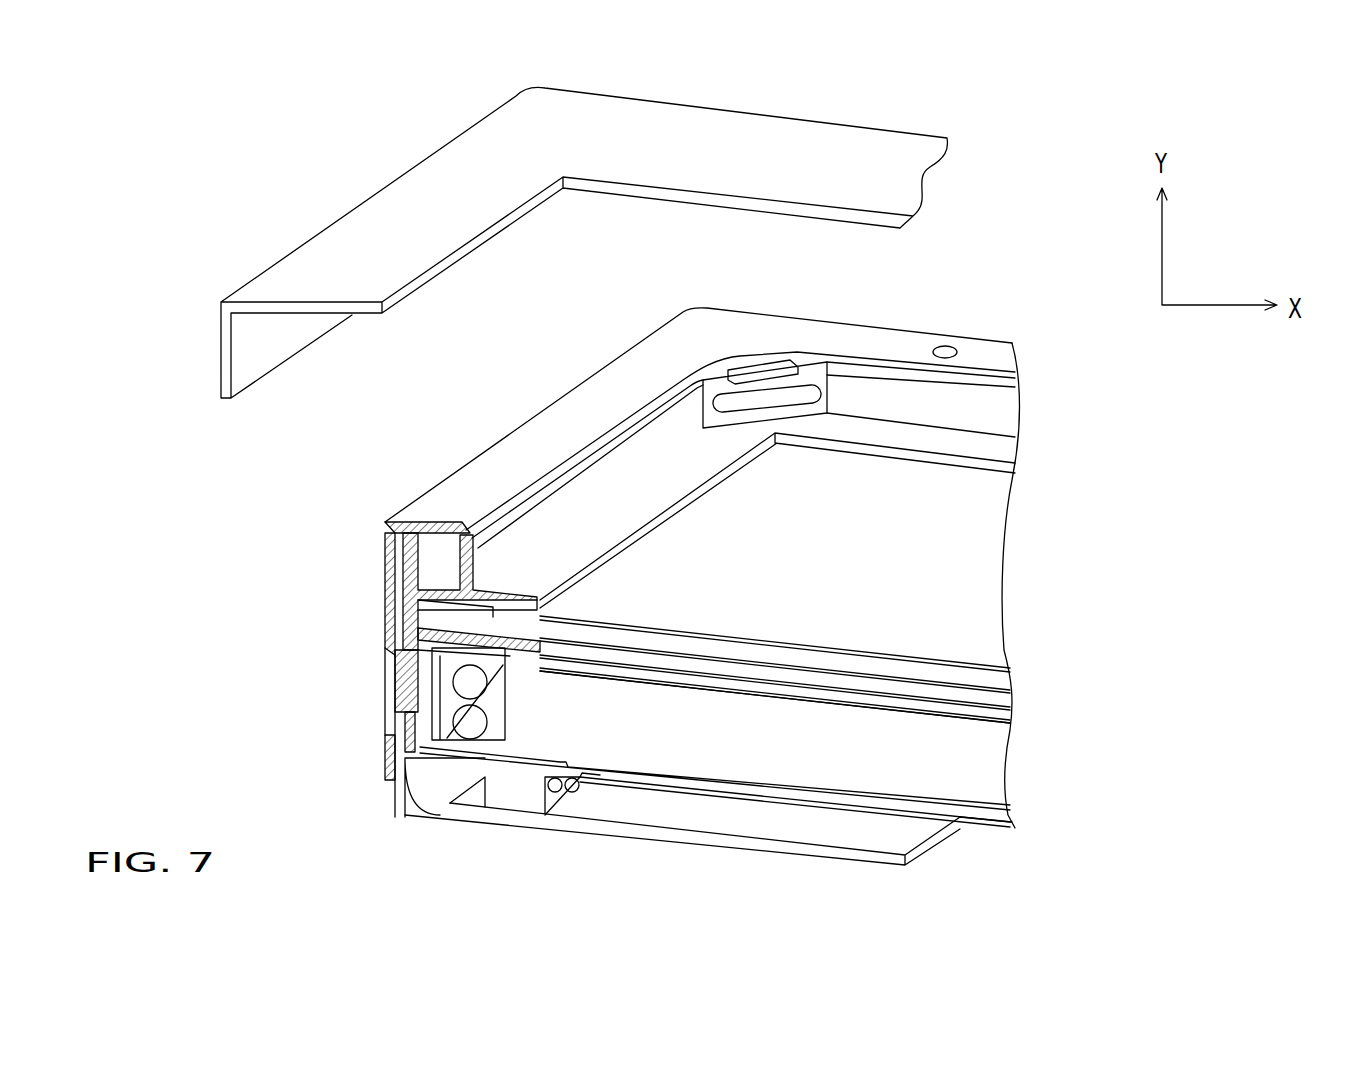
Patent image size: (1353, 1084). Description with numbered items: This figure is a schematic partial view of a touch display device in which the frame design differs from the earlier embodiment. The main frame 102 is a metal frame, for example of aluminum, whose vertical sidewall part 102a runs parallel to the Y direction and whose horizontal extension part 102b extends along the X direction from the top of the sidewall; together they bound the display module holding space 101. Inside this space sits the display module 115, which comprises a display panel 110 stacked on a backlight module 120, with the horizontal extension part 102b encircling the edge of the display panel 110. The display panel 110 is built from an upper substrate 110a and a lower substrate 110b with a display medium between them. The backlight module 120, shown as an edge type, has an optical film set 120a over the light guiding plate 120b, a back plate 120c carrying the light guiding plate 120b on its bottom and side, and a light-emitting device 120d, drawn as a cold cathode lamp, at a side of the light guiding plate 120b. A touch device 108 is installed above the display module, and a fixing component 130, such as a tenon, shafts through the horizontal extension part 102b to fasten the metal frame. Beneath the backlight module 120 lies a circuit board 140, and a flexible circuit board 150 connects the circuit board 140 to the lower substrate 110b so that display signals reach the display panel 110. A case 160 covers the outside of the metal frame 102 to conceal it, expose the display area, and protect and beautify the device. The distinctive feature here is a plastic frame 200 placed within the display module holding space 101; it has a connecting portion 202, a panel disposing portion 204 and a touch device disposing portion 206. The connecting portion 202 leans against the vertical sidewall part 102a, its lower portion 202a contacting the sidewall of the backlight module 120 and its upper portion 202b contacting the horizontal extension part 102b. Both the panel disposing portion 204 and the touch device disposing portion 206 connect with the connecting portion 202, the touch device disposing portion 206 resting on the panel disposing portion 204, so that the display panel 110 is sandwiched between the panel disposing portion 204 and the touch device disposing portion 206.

The display module holding space 101 is at (714, 570).
The main frame 102 is at (351, 567).
The vertical sidewall part 102a is at (385, 557).
The horizontal extension part 102b is at (418, 513).
The touch device 108 is at (815, 376).
The display panel 110 is at (865, 674).
The upper substrate 110a is at (995, 675).
The lower substrate 110b is at (1003, 693).
The display module 115 is at (830, 739).
The backlight module 120 is at (806, 759).
The optical film set 120a is at (1013, 720).
The light guiding plate 120b is at (990, 765).
The back plate 120c is at (990, 822).
The light-emitting device 120d is at (470, 728).
The fixing component 130 is at (943, 346).
The circuit board 140 is at (617, 833).
The flexible circuit board 150 is at (435, 792).
The case 160 is at (382, 232).
The frame 200 is at (364, 675).
The connecting portion 202 is at (394, 664).
The lower portion 202a is at (420, 700).
The upper portion 202b is at (418, 588).
The panel disposing portion 204 is at (420, 725).
The touch device disposing portion 206 is at (418, 577).